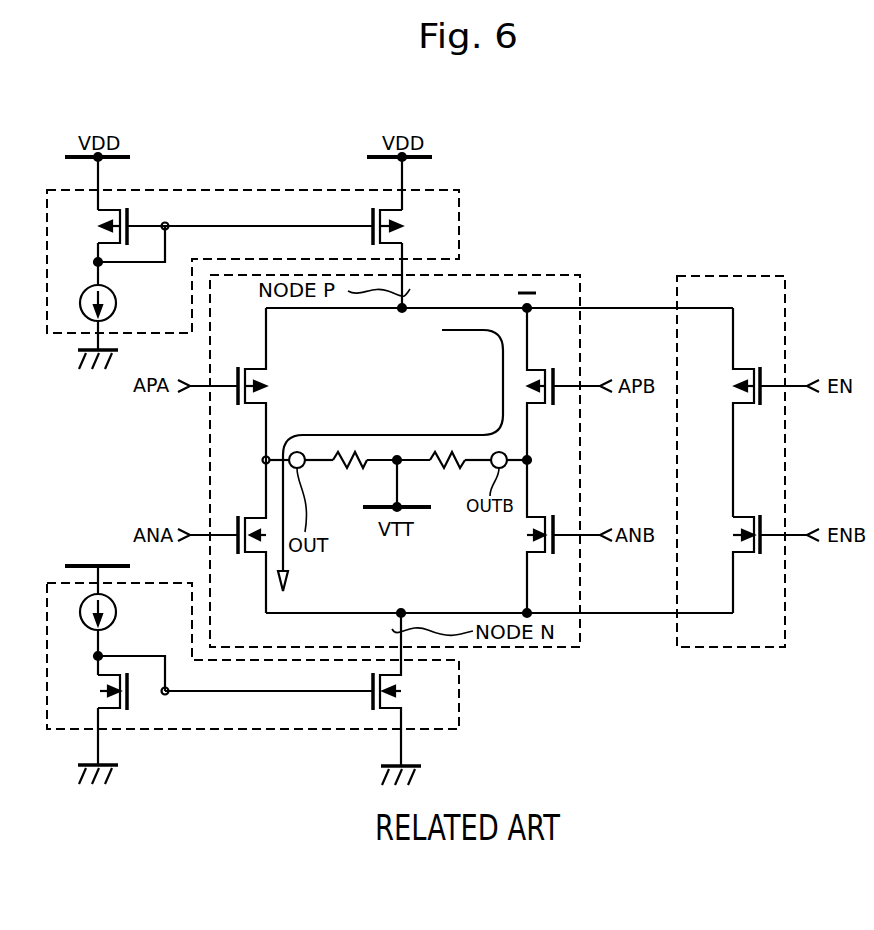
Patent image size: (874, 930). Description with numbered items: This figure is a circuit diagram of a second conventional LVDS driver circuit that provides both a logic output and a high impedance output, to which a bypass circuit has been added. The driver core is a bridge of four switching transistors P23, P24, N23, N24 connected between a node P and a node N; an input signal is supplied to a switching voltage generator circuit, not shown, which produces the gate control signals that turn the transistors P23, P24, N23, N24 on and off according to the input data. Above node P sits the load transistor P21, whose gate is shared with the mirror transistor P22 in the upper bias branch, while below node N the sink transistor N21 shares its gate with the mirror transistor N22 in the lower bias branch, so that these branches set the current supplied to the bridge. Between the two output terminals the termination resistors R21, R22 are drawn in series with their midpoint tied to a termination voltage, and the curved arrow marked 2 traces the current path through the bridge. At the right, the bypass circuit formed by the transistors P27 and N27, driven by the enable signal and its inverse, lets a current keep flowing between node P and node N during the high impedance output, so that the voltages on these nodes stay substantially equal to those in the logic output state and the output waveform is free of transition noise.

The PMOS transistor (load/current mirror) P21 is at (409, 226).
The PMOS transistor (current mirror reference) P22 is at (91, 226).
The transistor P23 is at (273, 384).
The transistor P24 is at (552, 384).
The transistor P27 is at (723, 412).
The NMOS transistor (sink/current mirror) N21 is at (410, 689).
The NMOS transistor (current mirror reference) N22 is at (91, 691).
The transistor N23 is at (243, 536).
The transistor N24 is at (519, 536).
The transistor N27 is at (723, 564).
The termination resistor R21 is at (352, 472).
The termination resistor R22 is at (449, 472).
The current path 2 is at (390, 454).